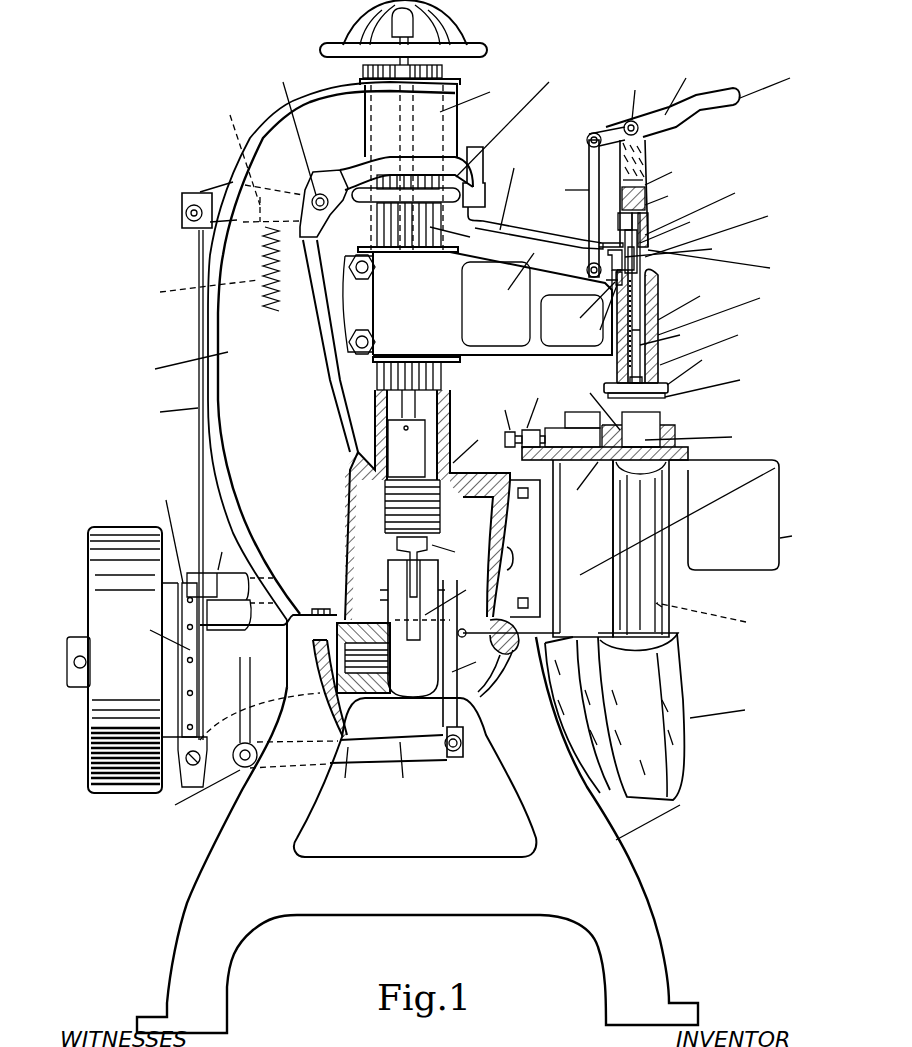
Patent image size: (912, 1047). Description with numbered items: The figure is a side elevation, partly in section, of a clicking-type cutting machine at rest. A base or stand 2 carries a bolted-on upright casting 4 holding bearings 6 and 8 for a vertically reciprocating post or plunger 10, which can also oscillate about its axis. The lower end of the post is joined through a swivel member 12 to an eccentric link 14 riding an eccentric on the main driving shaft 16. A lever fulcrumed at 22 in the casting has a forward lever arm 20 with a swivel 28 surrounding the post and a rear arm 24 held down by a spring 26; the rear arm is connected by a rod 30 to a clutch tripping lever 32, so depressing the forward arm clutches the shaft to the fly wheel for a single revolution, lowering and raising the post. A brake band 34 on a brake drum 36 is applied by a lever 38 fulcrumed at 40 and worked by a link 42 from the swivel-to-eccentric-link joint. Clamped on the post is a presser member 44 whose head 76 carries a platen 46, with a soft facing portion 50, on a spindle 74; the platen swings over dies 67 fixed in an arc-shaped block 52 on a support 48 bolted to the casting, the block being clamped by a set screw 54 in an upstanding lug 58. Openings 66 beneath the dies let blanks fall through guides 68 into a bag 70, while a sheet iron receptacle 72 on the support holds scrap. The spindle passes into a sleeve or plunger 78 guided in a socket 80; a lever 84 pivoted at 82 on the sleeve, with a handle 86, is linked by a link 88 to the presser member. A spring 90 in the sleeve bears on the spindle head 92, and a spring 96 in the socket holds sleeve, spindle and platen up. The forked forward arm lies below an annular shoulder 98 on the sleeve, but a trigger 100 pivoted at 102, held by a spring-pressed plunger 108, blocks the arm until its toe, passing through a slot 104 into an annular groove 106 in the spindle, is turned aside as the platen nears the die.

The base or stand 2 is at (417, 835).
The upright casting 4 is at (295, 384).
The bearing 6 is at (427, 488).
The bearing 8 is at (413, 125).
The post or plunger 10 is at (429, 215).
The swivel member 12 is at (435, 538).
The eccentric link 14 is at (436, 628).
The main driving shaft 16 is at (436, 717).
The lever arm 20 is at (523, 196).
The fulcrum 22 is at (370, 147).
The rear lever arm 24 is at (251, 156).
The spring 26 is at (203, 269).
The swivel 28 is at (465, 134).
The rod 30 is at (170, 466).
The clutch tripping lever 32 is at (232, 579).
The brake band 34 is at (113, 660).
The brake drum 36 is at (168, 606).
The lever 38 is at (323, 750).
The fulcrum 40 is at (199, 740).
The link 42 is at (472, 668).
The presser member 44 is at (477, 297).
The platen 46 is at (666, 366).
The support 48 is at (693, 541).
The platen portion 50 is at (689, 379).
The arc-shaped block 52 is at (597, 542).
The set screw 54 is at (502, 415).
The upstanding lug 58 is at (561, 409).
The opening 66 is at (681, 429).
The die 67 is at (613, 405).
The guide 68 is at (716, 616).
The bag 70 is at (660, 716).
The receptacle 72 is at (747, 515).
The spindle 74 is at (695, 348).
The head 76 is at (669, 298).
The sleeve or plunger 78 is at (700, 207).
The socket 80 is at (673, 326).
The pivot 82 is at (637, 99).
The lever 84 is at (646, 97).
The handle 86 is at (699, 96).
The link 88 is at (565, 205).
The spring 90 is at (663, 168).
The head 92 is at (660, 192).
The spring 96 is at (709, 323).
The annular shoulder 98 is at (694, 222).
The trigger 100 is at (720, 232).
The pivot 102 is at (585, 306).
The slot 104 is at (674, 223).
The annular groove 106 is at (669, 249).
The spring-pressed plunger 108 is at (602, 311).